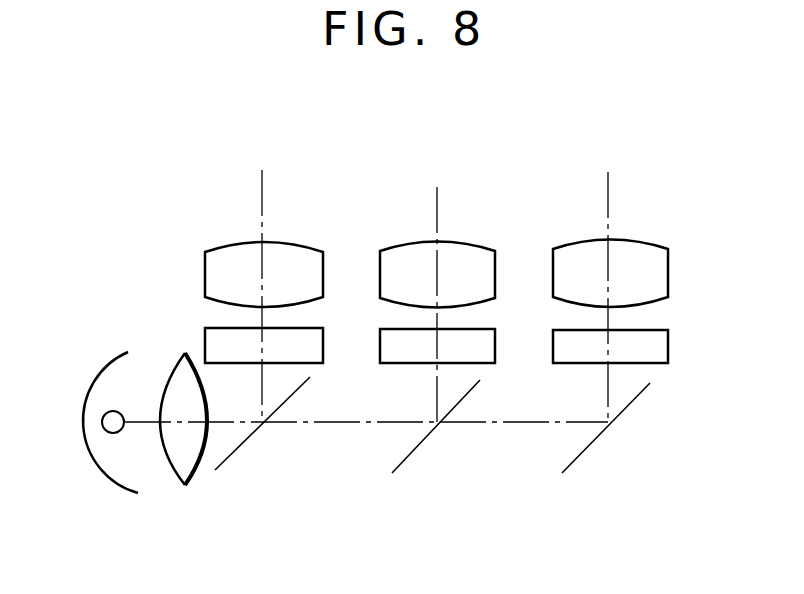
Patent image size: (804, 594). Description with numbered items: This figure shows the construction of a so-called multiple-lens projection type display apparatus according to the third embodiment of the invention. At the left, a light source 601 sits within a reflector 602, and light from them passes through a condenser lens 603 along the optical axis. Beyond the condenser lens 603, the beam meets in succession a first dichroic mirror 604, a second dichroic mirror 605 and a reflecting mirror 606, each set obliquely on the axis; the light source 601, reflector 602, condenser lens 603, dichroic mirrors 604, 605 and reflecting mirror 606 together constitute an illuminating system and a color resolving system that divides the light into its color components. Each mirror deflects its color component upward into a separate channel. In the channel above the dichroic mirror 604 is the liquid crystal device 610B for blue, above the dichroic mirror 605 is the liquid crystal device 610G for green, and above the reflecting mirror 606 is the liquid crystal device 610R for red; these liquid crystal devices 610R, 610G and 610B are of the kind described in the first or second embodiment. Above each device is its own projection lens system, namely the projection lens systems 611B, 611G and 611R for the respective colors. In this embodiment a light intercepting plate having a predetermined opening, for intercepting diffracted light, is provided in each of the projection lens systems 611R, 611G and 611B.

The light source 601 is at (119, 434).
The reflector 602 is at (86, 402).
The condenser lens 603 is at (187, 477).
The dichroic mirror 604 is at (252, 442).
The dichroic mirror 605 is at (417, 447).
The reflecting mirror 606 is at (588, 447).
The liquid crystal device for blue 610B is at (203, 340).
The liquid crystal device for green 610G is at (380, 358).
The liquid crystal device for red 610R is at (668, 357).
The projection lens system for blue 611B is at (220, 245).
The projection lens system for green 611G is at (387, 247).
The projection lens system for red 611R is at (642, 242).